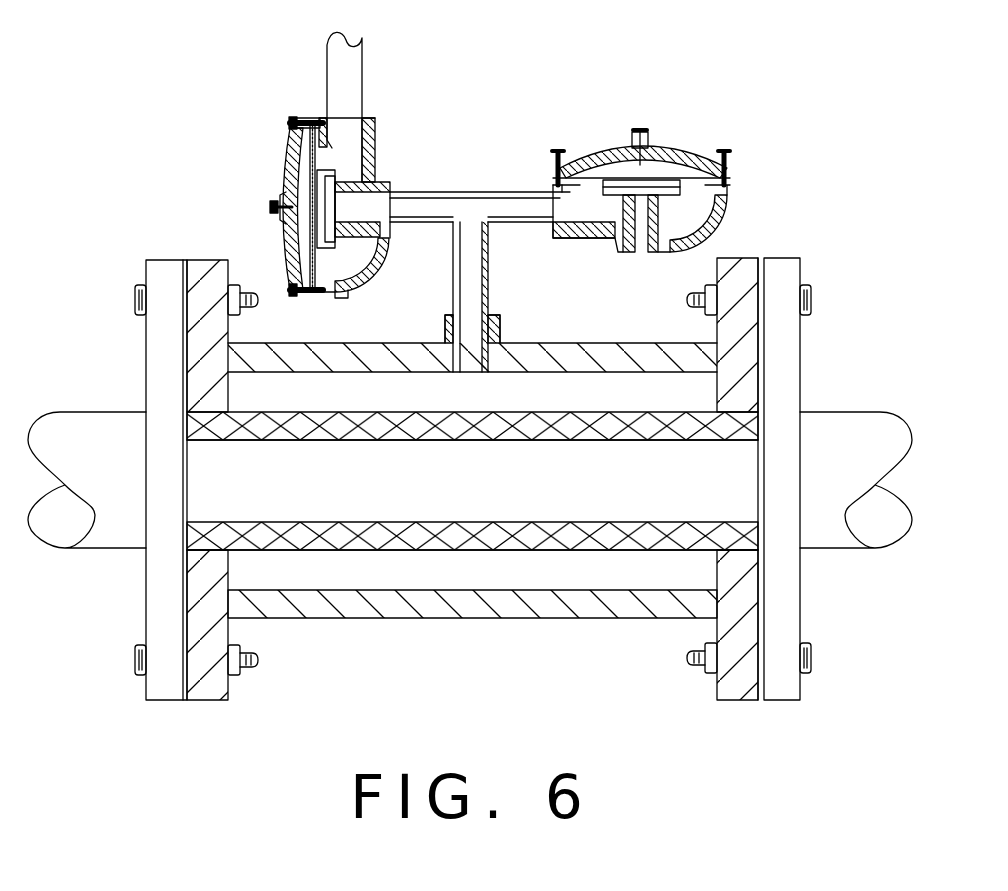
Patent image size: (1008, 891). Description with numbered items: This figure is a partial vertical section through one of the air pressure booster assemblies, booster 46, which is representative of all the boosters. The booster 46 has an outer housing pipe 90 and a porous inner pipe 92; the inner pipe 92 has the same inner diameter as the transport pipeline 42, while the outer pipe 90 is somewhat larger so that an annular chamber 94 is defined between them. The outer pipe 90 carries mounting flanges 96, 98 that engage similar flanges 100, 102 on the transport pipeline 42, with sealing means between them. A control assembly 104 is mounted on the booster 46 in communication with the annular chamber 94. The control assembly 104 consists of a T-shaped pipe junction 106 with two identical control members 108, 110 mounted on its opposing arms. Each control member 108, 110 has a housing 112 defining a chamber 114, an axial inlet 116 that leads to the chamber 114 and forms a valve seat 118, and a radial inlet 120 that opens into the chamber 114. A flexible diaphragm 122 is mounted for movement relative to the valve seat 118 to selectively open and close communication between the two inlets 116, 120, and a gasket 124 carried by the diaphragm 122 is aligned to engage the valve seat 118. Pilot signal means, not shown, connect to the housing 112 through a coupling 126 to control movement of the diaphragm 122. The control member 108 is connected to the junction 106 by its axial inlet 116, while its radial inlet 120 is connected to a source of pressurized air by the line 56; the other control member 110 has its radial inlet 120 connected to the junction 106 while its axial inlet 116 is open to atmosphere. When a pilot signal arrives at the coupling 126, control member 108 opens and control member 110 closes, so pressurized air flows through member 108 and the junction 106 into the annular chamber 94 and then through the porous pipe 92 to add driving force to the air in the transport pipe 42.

The transport pipeline 42 is at (93, 412).
The booster 46 is at (160, 209).
The line 56 is at (327, 72).
The outer housing pipe 90 is at (487, 618).
The porous inner pipe 92 is at (478, 523).
The annular chamber 94 is at (562, 585).
The mounting flange 96 is at (210, 702).
The mounting flange 98 is at (735, 702).
The flange 100 is at (146, 352).
The flange 102 is at (803, 352).
The control assembly 104 is at (469, 152).
The T-shaped pipe junction 106 is at (490, 296).
The control member 108 is at (262, 112).
The control member 110 is at (610, 129).
The housing 112 is at (290, 182).
The chamber 114 is at (342, 260).
The axial inlet 116 is at (372, 205).
The valve seat 118 is at (668, 198).
The radial inlet 120 is at (364, 120).
The flexible diaphragm 122 is at (310, 230).
The gasket 124 is at (643, 200).
The coupling 126 is at (643, 132).